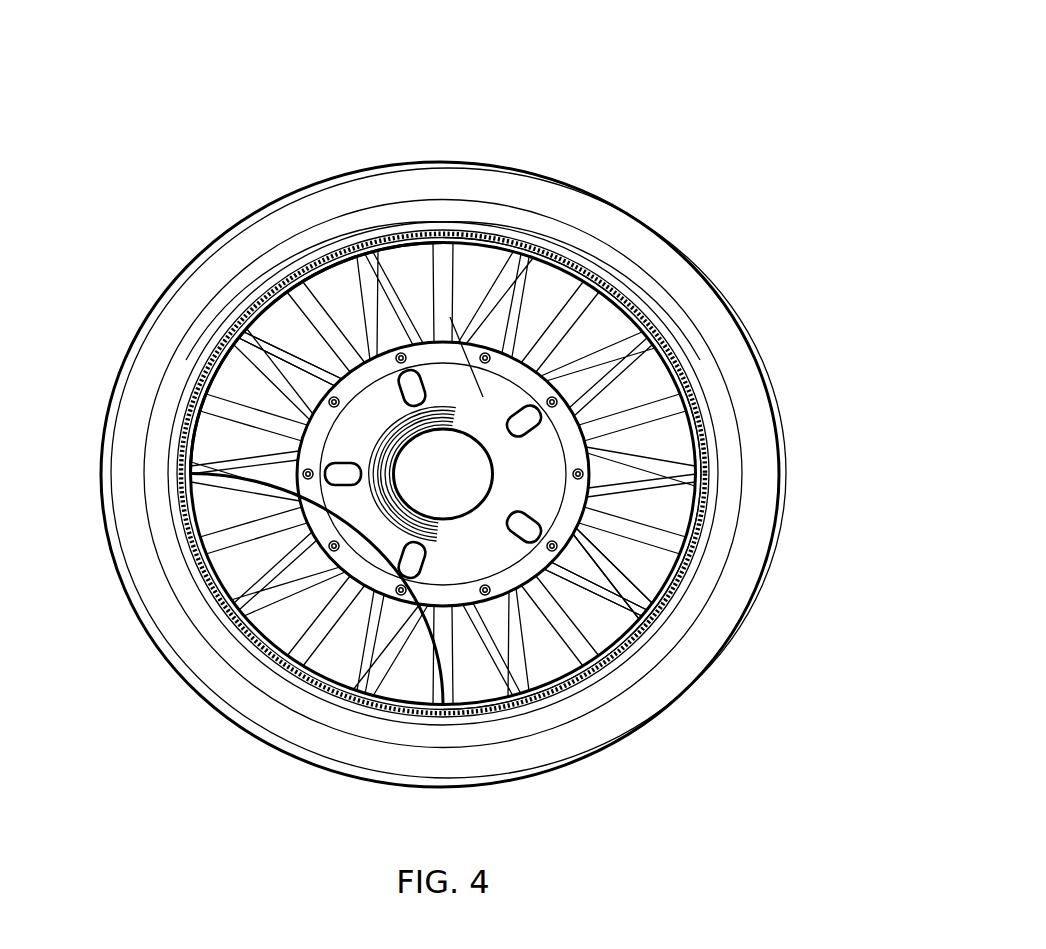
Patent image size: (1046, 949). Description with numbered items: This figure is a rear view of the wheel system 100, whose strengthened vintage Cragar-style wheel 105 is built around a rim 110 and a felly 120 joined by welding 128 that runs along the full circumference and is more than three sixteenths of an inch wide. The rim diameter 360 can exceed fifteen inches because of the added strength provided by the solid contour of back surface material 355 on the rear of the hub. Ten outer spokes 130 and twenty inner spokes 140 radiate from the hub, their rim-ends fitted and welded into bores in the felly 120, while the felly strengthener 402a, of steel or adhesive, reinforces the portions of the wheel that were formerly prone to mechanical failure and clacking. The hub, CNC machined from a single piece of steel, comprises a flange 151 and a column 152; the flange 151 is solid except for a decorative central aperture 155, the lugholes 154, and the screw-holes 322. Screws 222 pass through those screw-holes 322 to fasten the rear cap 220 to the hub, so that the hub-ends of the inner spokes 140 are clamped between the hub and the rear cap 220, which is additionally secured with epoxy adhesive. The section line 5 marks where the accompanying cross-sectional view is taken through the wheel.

The wheel system 100 is at (454, 434).
The strengthened vintage Cragar-style wheel 105 is at (692, 85).
The rim 110 is at (663, 265).
The felly 120 is at (716, 286).
The outer spokes 130 is at (670, 338).
The rim diameter 360 is at (762, 440).
The inner spokes 140 is at (627, 577).
The lugholes 154 is at (665, 604).
The flange 151 is at (258, 512).
The column 152 is at (567, 410).
The aperture 155 is at (425, 463).
The welding 128 is at (303, 673).
The felly strengthener 402a is at (207, 360).
The back surface material 355 is at (457, 237).
The rear cap 220 is at (222, 310).
The screws 222 is at (262, 290).
The screw-holes 322 is at (323, 288).
The section line 5 is at (440, 75).